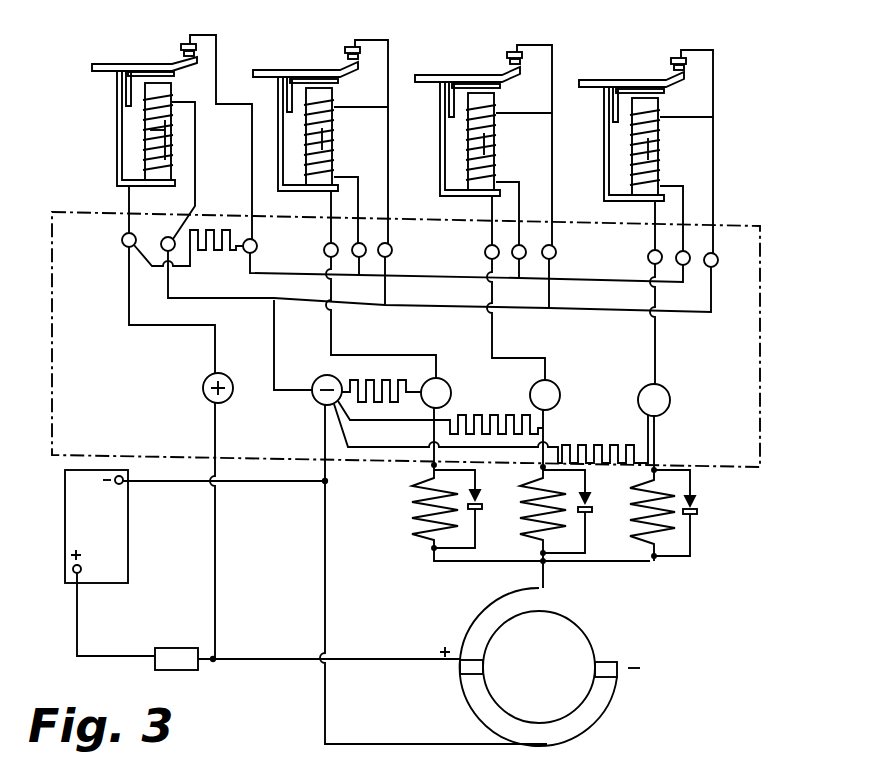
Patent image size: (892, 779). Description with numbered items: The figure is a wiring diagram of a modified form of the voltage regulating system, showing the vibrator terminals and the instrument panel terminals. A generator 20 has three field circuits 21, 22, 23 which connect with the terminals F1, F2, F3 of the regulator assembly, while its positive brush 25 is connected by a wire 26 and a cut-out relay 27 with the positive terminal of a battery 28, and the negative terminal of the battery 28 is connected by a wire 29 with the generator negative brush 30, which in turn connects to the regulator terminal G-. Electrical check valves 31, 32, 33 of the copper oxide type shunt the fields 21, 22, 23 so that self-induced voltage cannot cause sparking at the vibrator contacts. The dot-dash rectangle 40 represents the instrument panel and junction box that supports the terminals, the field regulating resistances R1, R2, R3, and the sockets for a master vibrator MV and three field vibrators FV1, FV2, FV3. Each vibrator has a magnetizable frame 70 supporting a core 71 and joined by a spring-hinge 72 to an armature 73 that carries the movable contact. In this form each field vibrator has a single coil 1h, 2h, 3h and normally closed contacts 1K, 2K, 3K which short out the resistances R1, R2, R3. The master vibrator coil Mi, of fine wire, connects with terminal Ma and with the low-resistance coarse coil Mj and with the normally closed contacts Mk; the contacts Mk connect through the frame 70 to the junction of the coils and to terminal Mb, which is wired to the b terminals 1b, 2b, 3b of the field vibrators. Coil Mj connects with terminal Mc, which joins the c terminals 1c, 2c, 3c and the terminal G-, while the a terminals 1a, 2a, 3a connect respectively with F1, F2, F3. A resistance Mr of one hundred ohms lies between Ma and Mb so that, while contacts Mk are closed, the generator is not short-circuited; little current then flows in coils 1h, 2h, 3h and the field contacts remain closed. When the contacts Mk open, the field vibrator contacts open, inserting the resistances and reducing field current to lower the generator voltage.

The generator 20 is at (578, 626).
The field circuit 21 is at (410, 513).
The field circuit 22 is at (522, 517).
The field circuit 23 is at (630, 524).
The generator positive brush 25 is at (468, 675).
The wire 26 is at (255, 661).
The cut-out relay 27 is at (170, 647).
The battery 28 is at (65, 541).
The wire 29 is at (258, 483).
The generator negative brush 30 is at (608, 661).
The electrical check valve 31 is at (483, 503).
The electrical check valve 32 is at (592, 507).
The electrical check valve 33 is at (697, 510).
The instrument panel and junction box 40 is at (762, 344).
The magnetizable frame 70 is at (117, 167).
The magnetizable core 71 is at (150, 172).
The spring-hinge 72 is at (104, 63).
The magnetizable armature 73 is at (175, 76).
The master vibrator MV is at (168, 30).
The field regulating vibrator FV1 is at (324, 34).
The field regulating vibrator FV2 is at (490, 38).
The field regulating vibrator FV3 is at (646, 44).
The vibrator socket terminal Ma is at (122, 240).
The vibrator socket terminal Mb is at (257, 246).
The vibrator socket terminal Mc is at (163, 238).
The resistance Mr is at (215, 229).
The master vibrator coil Mj is at (150, 120).
The master vibrator coil Mi is at (150, 150).
The normally closed contacts Mk is at (181, 50).
The normally closed contacts 1K is at (345, 55).
The normally closed contacts 2K is at (507, 60).
The normally closed contacts 3K is at (671, 64).
The field vibrator coil 1h is at (333, 140).
The field vibrator coil 2h is at (496, 145).
The field vibrator coil 3h is at (660, 150).
The field vibrator a terminal 1a is at (324, 249).
The field vibrator b terminal 1b is at (356, 244).
The field vibrator c terminal 1c is at (388, 245).
The field vibrator a terminal 2a is at (485, 251).
The field vibrator b terminal 2b is at (516, 246).
The field vibrator c terminal 2c is at (554, 249).
The field vibrator a terminal 3a is at (648, 256).
The field vibrator b terminal 3b is at (680, 251).
The field vibrator c terminal 3c is at (716, 257).
The regulator terminal G- is at (320, 383).
The field regulating resistance R1 is at (381, 381).
The field regulating resistance R2 is at (488, 415).
The field regulating resistance R3 is at (603, 439).
The regulator terminal F1 is at (448, 437).
The regulator terminal F2 is at (557, 438).
The regulator terminal F3 is at (664, 440).